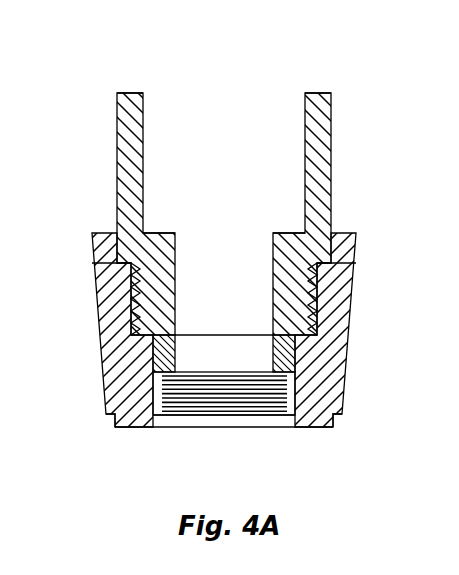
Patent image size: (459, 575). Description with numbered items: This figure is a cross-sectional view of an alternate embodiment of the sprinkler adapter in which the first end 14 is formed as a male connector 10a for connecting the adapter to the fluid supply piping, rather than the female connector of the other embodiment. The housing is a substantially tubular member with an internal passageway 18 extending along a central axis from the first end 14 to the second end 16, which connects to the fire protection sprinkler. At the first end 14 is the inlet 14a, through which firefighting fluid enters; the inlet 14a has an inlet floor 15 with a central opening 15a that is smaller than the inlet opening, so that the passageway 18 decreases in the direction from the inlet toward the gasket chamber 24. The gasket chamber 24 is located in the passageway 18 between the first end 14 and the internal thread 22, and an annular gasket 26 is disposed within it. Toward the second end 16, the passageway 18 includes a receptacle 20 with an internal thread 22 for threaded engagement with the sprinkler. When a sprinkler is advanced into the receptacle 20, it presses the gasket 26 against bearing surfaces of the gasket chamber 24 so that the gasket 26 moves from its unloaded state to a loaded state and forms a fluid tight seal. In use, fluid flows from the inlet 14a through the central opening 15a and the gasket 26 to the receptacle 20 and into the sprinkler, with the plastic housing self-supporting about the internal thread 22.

The male connector 10a is at (77, 151).
The first end 14 is at (320, 93).
The inlet 14a is at (268, 77).
The inlet floor 15 is at (297, 233).
The central opening 15a is at (248, 227).
The internal passageway 18 is at (235, 299).
The gasket chamber 24 is at (150, 352).
The gasket 26 is at (286, 357).
The internal thread 22 is at (172, 408).
The receptacle 20 is at (267, 430).
The second end 16 is at (322, 425).